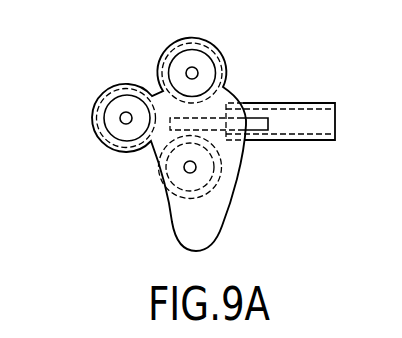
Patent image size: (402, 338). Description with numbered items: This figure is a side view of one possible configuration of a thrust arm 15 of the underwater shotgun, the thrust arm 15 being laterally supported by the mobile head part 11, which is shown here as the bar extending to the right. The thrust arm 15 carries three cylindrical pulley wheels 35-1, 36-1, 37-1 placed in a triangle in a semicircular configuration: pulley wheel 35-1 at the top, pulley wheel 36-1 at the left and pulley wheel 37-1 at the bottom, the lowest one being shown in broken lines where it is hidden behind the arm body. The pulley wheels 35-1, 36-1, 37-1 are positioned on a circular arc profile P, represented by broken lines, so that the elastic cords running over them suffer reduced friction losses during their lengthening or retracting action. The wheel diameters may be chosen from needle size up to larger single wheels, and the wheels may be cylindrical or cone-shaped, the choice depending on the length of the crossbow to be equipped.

The circular arc profile P is at (237, 87).
The pulley wheel 35-1 is at (199, 39).
The pulley wheel 36-1 is at (114, 86).
The pulley wheel 37-1 is at (163, 176).
The thrust arm 15 is at (228, 173).
The mobile head part 11 is at (287, 123).